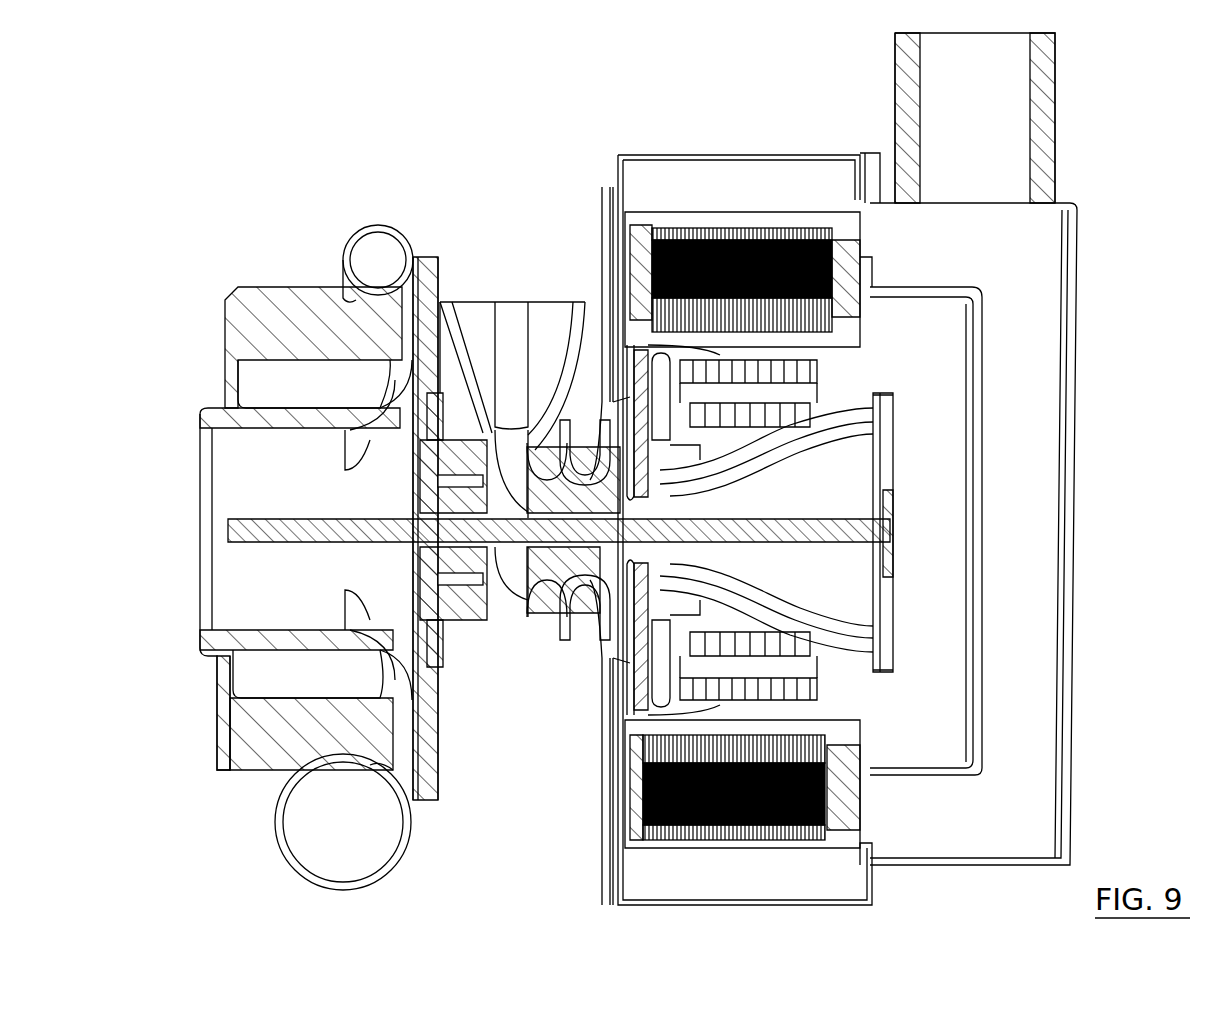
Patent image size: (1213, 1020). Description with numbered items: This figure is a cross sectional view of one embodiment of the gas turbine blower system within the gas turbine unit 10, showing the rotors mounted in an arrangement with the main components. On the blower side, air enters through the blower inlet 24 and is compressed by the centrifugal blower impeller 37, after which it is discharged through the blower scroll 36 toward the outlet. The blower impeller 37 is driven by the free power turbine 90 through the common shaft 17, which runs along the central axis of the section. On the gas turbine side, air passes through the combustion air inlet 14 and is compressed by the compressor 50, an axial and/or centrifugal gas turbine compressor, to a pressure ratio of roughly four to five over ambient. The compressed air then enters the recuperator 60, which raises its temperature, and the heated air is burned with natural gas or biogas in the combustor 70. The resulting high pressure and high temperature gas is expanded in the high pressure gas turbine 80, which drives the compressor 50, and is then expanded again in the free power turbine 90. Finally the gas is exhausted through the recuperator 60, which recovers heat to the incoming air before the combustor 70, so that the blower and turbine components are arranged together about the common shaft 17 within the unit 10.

The gas turbine unit 10 is at (605, 91).
The combustion air inlet 14 is at (508, 322).
The common shaft 17 is at (790, 525).
The blower inlet 24 is at (232, 580).
The blower scroll 36 is at (372, 226).
The centrifugal blower impeller 37 is at (418, 650).
The compressor 50 is at (565, 583).
The recuperator 60 is at (718, 155).
The combustor 70 is at (655, 350).
The high pressure gas turbine 80 is at (600, 630).
The free power turbine 90 is at (893, 410).